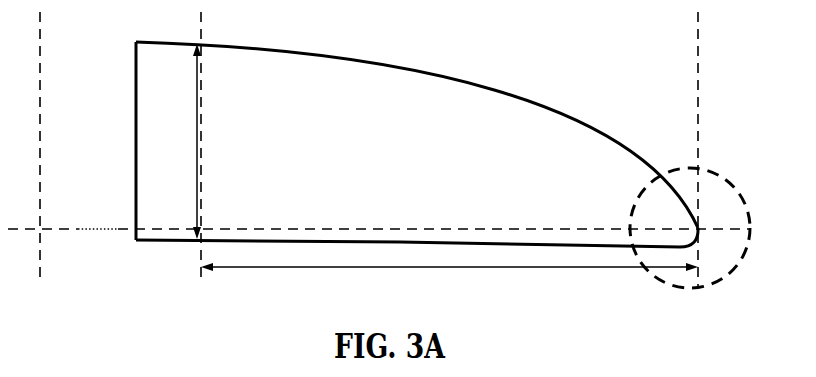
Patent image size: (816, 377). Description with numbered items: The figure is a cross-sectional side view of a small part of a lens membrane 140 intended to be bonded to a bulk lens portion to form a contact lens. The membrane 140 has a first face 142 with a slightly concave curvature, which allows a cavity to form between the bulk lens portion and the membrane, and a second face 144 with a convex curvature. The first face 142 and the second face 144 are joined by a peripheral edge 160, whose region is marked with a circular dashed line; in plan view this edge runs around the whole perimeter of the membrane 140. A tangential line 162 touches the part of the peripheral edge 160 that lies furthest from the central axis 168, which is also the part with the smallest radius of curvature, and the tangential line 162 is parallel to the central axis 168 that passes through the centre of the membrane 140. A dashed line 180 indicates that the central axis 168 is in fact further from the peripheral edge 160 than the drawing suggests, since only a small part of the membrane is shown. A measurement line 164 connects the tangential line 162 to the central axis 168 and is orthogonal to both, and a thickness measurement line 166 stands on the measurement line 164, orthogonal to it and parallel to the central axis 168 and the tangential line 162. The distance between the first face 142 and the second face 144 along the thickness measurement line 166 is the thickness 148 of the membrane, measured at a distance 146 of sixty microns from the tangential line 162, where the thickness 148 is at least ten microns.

The membrane 140 is at (417, 177).
The first face 142 is at (533, 245).
The second face 144 is at (545, 107).
The distance 146 is at (605, 268).
The thickness of the membrane 148 is at (196, 147).
The peripheral edge 160 is at (734, 185).
The tangential line 162 is at (700, 82).
The measurement line 164 is at (420, 229).
The thickness measurement line 166 is at (203, 143).
The central axis 168 is at (41, 97).
The dashed line 180 is at (100, 230).